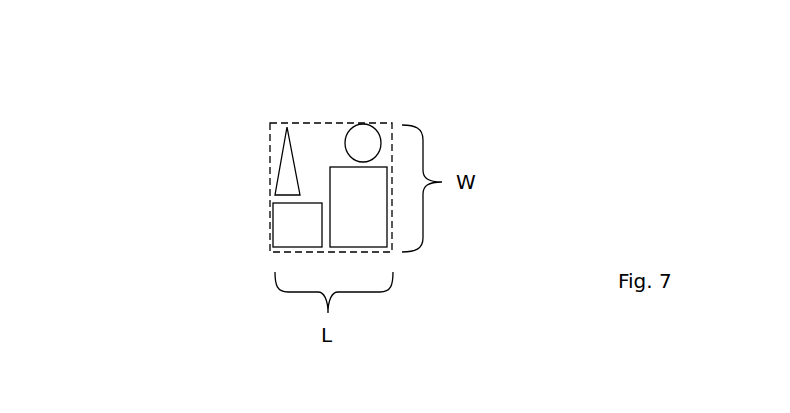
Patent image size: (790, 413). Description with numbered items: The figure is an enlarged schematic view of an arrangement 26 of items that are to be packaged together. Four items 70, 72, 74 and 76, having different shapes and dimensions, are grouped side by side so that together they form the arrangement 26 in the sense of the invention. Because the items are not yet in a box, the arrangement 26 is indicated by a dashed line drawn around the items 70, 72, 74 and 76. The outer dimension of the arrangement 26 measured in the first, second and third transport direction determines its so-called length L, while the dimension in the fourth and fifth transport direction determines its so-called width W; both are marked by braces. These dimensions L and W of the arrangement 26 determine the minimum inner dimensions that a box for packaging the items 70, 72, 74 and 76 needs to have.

The arrangement 26 is at (271, 142).
The item 70 is at (364, 136).
The item 72 is at (363, 208).
The item 74 is at (283, 232).
The item 76 is at (283, 178).